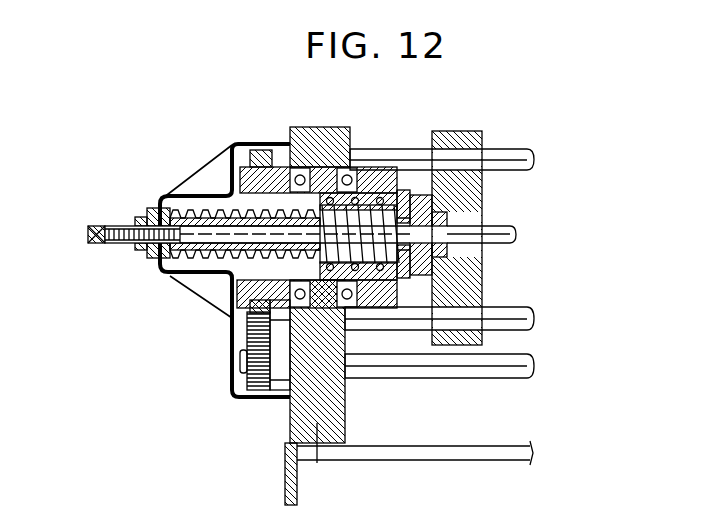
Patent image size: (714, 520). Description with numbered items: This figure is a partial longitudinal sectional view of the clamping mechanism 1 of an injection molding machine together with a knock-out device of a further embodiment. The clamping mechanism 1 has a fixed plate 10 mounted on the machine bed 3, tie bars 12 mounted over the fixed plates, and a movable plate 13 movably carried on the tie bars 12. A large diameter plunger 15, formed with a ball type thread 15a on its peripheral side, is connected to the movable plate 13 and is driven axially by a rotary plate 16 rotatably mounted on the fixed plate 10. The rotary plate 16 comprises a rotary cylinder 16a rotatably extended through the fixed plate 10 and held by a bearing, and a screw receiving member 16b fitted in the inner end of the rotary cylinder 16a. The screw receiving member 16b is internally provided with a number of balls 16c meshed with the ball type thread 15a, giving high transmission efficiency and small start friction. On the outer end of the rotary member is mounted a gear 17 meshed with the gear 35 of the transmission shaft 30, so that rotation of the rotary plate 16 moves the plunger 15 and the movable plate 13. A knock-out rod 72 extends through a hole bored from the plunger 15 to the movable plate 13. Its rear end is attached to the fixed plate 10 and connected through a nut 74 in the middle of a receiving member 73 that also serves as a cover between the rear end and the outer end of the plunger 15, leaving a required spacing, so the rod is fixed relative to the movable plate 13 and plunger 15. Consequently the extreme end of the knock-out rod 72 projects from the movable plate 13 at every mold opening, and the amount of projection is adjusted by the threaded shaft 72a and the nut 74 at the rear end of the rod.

The clamping mechanism 1 is at (482, 126).
The machine bed 3 is at (287, 478).
The fixed plate 10 is at (318, 137).
The tie bars 12 is at (508, 160).
The movable plate 13 is at (456, 145).
The plunger 15 is at (198, 216).
The ball type thread 15a is at (263, 263).
The rotary plate 16 is at (412, 193).
The rotary cylinder 16a is at (370, 166).
The screw receiving member 16b is at (383, 300).
The balls 16c is at (322, 170).
The gear 17 is at (262, 140).
The transmission shaft 30 is at (448, 370).
The gear 35 is at (243, 368).
The knock-out rod 72 is at (193, 232).
The threaded shaft 72a is at (126, 224).
The receiving member 73 is at (157, 210).
The nut 74 is at (137, 252).